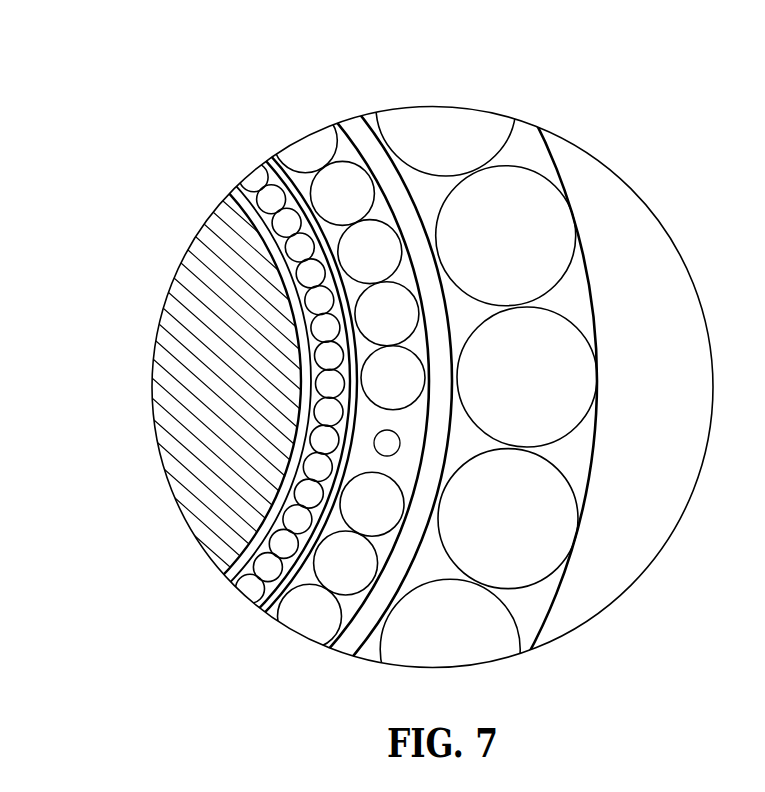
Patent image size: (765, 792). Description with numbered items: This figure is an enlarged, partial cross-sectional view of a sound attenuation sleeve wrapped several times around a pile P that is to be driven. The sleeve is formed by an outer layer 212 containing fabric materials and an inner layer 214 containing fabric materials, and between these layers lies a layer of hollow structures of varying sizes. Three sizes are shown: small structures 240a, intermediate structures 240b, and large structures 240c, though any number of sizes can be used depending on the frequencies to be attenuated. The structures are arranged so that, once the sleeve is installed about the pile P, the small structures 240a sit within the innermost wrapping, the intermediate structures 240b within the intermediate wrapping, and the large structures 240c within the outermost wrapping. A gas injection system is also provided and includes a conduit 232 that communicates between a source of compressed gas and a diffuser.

The pile P is at (200, 360).
The outer layer 212 is at (330, 130).
The inner layer 214 is at (267, 167).
The conduit 232 is at (388, 443).
The small structures 240a is at (253, 587).
The intermediate structures 240b is at (308, 620).
The large structures 240c is at (470, 643).